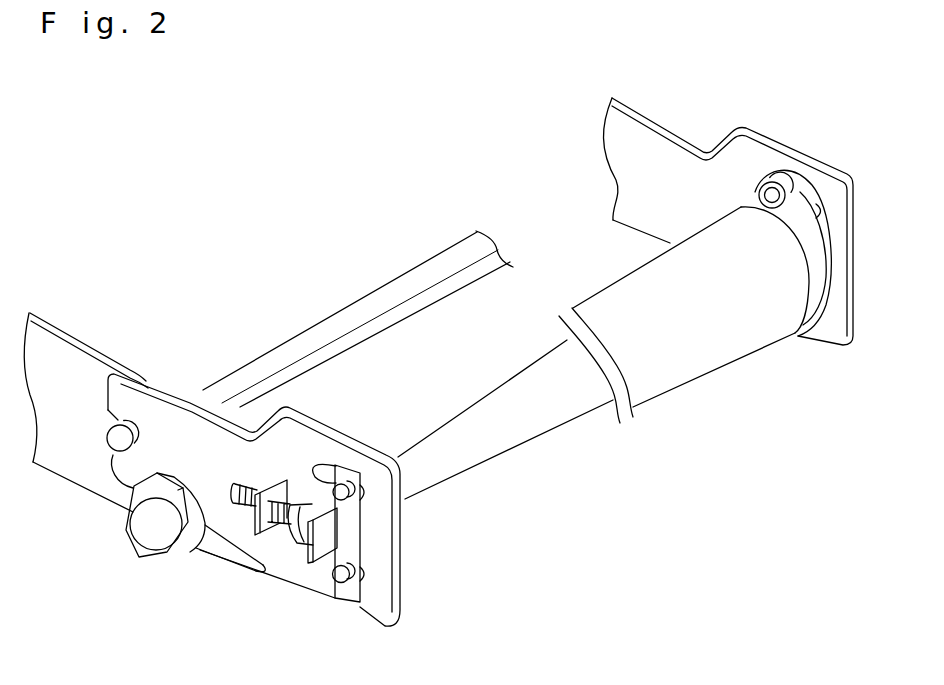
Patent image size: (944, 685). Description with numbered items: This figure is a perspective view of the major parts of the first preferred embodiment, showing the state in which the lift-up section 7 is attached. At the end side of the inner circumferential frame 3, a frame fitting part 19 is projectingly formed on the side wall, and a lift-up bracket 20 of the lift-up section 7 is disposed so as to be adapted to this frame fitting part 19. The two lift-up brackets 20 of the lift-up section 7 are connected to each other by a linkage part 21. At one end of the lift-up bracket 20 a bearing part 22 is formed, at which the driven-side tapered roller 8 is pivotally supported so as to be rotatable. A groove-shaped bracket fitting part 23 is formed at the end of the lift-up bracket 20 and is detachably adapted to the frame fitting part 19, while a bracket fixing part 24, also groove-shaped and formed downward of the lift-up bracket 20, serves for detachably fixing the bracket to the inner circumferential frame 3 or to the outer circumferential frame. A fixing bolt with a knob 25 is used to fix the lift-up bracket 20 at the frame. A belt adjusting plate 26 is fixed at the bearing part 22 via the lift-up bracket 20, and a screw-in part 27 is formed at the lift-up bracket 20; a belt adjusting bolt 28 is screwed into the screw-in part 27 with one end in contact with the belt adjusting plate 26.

The lift-up section 7 is at (170, 224).
The inner circumferential frame 3 is at (63, 355).
The driven-side tapered roller 8 is at (522, 422).
The frame fitting part 19 is at (120, 443).
The lift-up bracket 20 is at (195, 437).
The linkage part 21 is at (377, 303).
The bearing part 22 is at (800, 227).
The bracket fitting part 23 is at (107, 416).
The bracket fixing part 24 is at (196, 503).
The fixing bolt with a knob 25 is at (150, 532).
The belt adjusting plate 26 is at (333, 538).
The screw-in part 27 is at (267, 527).
The belt adjusting bolt 28 is at (294, 534).